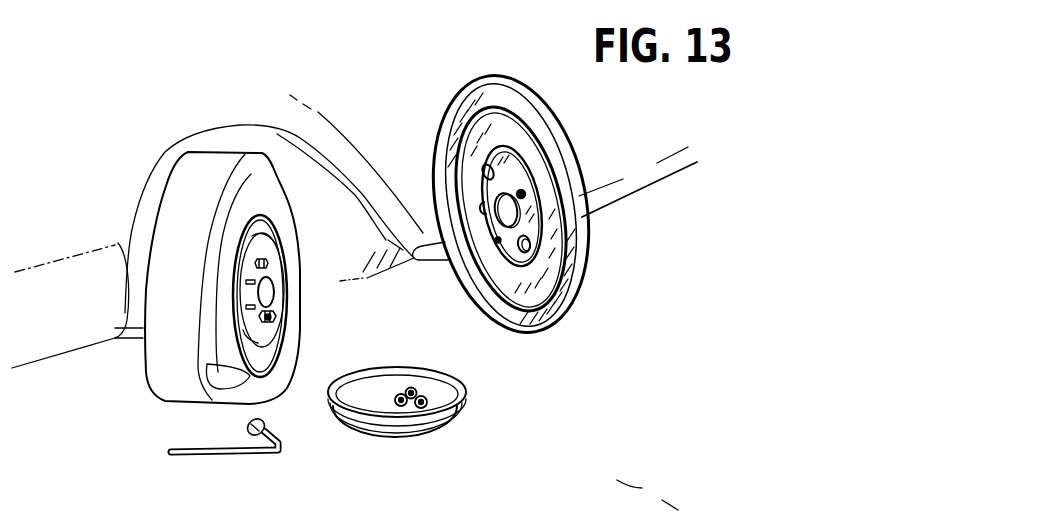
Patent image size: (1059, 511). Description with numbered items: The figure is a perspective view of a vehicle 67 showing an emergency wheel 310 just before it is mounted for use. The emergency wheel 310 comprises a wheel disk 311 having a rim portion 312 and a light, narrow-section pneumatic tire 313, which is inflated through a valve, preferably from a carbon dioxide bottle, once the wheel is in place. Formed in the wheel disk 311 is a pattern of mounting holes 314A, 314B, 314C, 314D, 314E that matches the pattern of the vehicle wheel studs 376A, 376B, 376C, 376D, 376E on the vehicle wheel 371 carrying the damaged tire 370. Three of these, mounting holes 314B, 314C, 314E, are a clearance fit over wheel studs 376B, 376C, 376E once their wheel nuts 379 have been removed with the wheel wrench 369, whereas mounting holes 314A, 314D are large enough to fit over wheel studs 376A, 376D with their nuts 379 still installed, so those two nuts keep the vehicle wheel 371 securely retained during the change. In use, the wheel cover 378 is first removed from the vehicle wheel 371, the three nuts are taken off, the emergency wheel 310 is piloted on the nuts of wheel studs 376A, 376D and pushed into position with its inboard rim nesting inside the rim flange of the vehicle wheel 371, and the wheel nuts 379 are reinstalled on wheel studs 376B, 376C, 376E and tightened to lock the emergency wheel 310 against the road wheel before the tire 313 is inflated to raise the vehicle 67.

The vehicle 67 is at (661, 180).
The emergency wheel 310 is at (512, 203).
The wheel disk 311 is at (513, 183).
The rim portion 312 is at (522, 147).
The pneumatic tire 313 is at (458, 92).
The mounting hole 314A is at (487, 168).
The mounting hole 314B is at (487, 207).
The mounting hole 314C is at (498, 240).
The mounting hole 314D is at (528, 247).
The mounting hole 314E is at (526, 194).
The wheel wrench 369 is at (228, 457).
The damaged tire 370 is at (145, 370).
The vehicle wheel 371 is at (256, 353).
The wheel stud 376A is at (268, 262).
The wheel stud 376B is at (251, 281).
The wheel stud 376C is at (250, 308).
The wheel stud 376D is at (280, 314).
The wheel stud 376E is at (279, 289).
The wheel cover 378 is at (422, 424).
The wheel nuts 379 is at (277, 322).